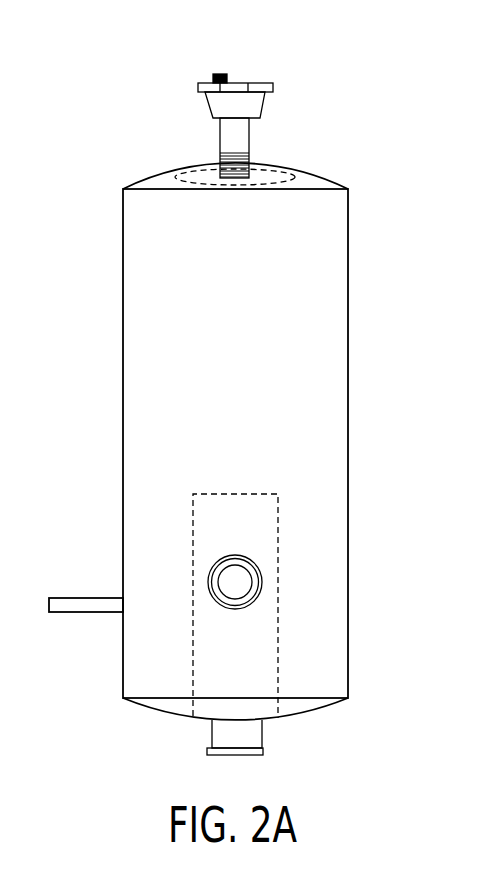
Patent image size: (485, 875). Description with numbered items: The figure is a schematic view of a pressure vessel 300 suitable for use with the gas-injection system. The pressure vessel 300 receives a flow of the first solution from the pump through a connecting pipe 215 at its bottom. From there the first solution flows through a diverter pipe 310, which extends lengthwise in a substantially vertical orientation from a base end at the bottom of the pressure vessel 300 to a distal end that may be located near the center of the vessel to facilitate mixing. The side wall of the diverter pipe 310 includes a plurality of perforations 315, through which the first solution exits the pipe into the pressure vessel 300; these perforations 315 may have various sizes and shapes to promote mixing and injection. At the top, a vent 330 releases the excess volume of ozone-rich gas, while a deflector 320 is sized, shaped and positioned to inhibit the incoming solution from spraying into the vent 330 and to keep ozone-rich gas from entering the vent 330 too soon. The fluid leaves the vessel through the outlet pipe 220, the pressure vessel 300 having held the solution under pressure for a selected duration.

The pressure vessel 300 is at (123, 288).
The vent 330 is at (224, 74).
The deflector 320 is at (267, 187).
The outlet pipe 220 is at (92, 598).
The diverter pipe 310 is at (278, 521).
The perforations 315 is at (268, 583).
The connecting pipe 215 is at (263, 751).